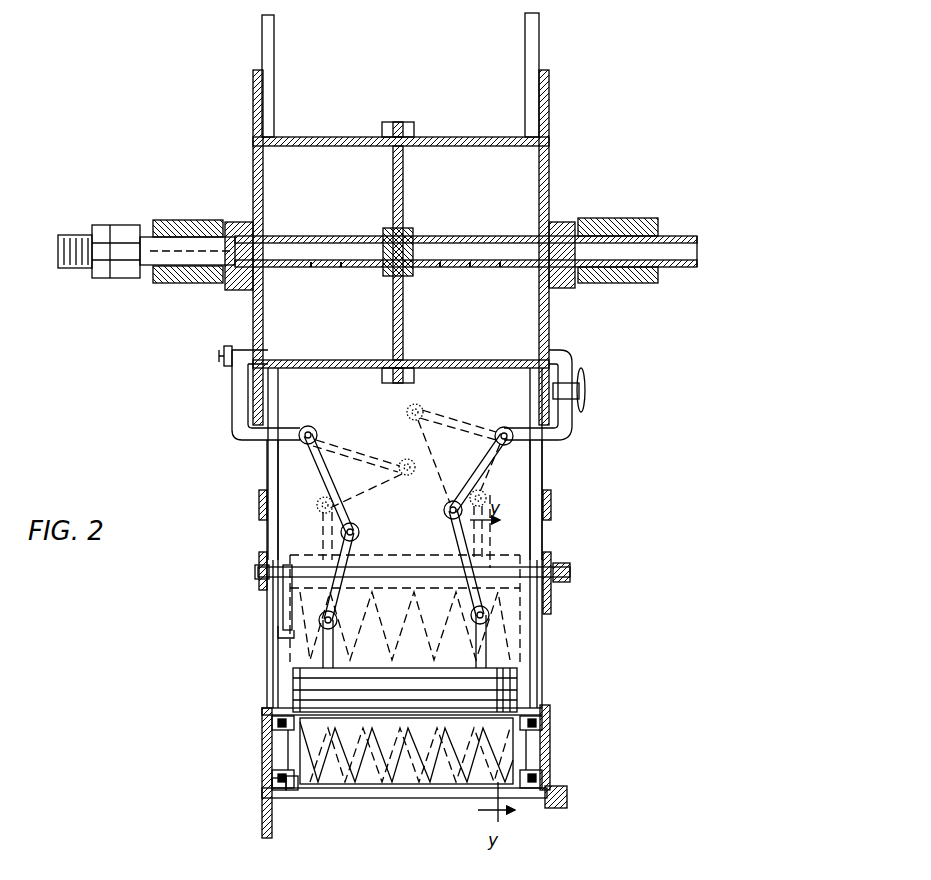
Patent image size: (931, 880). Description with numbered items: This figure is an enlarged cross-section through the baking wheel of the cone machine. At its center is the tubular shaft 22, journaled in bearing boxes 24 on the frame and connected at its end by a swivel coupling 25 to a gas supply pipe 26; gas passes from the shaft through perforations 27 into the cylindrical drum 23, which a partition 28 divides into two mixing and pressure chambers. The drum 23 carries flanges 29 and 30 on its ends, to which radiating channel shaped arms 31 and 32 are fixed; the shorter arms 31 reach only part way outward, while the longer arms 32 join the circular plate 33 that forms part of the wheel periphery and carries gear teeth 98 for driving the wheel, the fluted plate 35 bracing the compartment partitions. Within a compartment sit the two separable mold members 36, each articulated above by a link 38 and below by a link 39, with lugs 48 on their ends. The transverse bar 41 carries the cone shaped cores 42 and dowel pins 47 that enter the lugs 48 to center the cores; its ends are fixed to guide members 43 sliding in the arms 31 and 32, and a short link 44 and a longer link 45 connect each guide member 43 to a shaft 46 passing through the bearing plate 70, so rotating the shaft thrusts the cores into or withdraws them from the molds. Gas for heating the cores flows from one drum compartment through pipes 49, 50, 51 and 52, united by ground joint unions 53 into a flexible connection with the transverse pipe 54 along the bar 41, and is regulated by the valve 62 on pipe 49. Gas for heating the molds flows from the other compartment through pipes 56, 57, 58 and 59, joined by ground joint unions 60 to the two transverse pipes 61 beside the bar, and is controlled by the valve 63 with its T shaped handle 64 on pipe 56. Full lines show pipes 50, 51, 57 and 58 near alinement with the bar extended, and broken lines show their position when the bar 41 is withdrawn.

The tubular shaft 22 is at (308, 238).
The cylindrical drum 23 is at (263, 187).
The bearing box 24 is at (160, 220).
The swivel coupling 25 is at (112, 278).
The pipe 26 is at (85, 236).
The perforations 27 is at (343, 268).
The partition 28 is at (403, 194).
The flange 29 is at (253, 92).
The flange 30 is at (549, 97).
The channel shaped arm 31 is at (274, 62).
The channel shaped arm 32 is at (525, 83).
The circular plate 33 is at (551, 752).
The fluted plate 35 is at (262, 824).
The mold member 36 is at (378, 778).
The link 38 is at (275, 721).
The link 39 is at (291, 798).
The transverse bar 41 is at (390, 706).
The core 42 is at (522, 647).
The guide member 43 is at (273, 655).
The short link 44 is at (283, 607).
The longer link 45 is at (292, 617).
The shaft 46 is at (268, 568).
The dowel pin 47 is at (282, 738).
The lug 48 is at (275, 778).
The pipe 49 is at (232, 404).
The pipe 50 is at (373, 457).
The pipe 51 is at (358, 550).
The pipe 52 is at (332, 661).
The ground joint union 53 is at (317, 432).
The transverse pipe 54 is at (305, 670).
The pipe 56 is at (566, 352).
The pipe 57 is at (483, 470).
The pipe 58 is at (461, 537).
The pipe 59 is at (476, 648).
The ground joint union 60 is at (505, 428).
The transverse pipe 61 is at (503, 688).
The regulating valve 62 is at (219, 356).
The valve 63 is at (582, 390).
The T shaped handle 64 is at (585, 410).
The bearing plate 70 is at (551, 525).
The gear teeth 98 is at (568, 802).